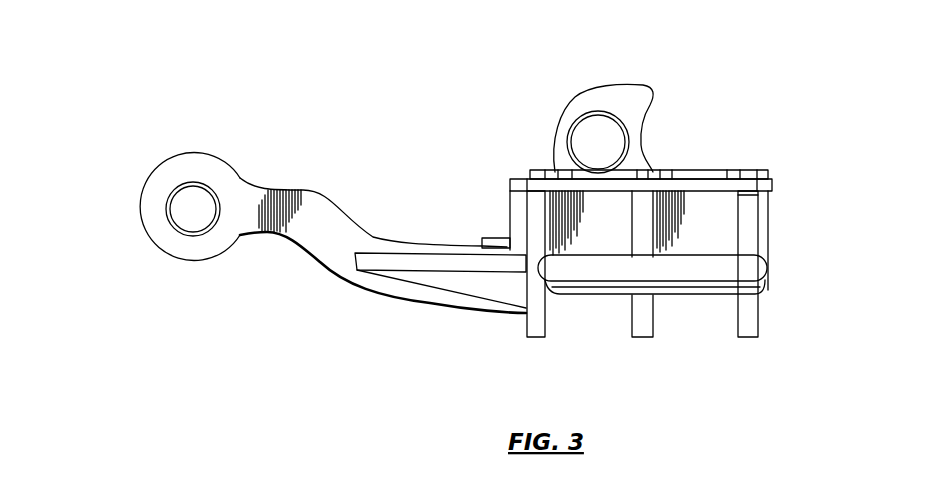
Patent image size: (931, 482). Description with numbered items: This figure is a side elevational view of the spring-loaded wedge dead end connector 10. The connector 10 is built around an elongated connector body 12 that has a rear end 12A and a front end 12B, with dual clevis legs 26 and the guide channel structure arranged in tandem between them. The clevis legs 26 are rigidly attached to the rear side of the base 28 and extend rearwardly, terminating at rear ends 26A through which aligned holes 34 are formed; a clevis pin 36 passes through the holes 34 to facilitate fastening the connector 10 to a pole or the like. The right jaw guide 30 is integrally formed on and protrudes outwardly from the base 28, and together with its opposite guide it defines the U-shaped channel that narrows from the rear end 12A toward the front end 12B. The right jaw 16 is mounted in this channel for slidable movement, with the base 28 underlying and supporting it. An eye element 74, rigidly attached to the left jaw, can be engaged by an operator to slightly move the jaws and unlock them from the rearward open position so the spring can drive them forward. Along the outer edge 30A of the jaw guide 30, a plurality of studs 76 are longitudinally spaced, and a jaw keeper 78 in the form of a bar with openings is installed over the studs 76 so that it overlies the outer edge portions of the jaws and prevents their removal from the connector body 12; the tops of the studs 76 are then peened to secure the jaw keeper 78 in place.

The spring-loaded wedge dead end connector 10 is at (456, 82).
The connector body 12 is at (512, 343).
The rear end 12A is at (526, 282).
The front end 12B is at (758, 283).
The right jaw 16 is at (572, 173).
The clevis legs 26 is at (374, 238).
The rear ends 26A is at (167, 167).
The base 28 is at (700, 295).
The right jaw guide 30 is at (717, 225).
The outer edge 30A is at (723, 203).
The holes 34 is at (190, 230).
The clevis pin 36 is at (193, 208).
The eye element 74 is at (618, 92).
The studs 76 is at (547, 172).
The jaw keepers 78 is at (695, 187).